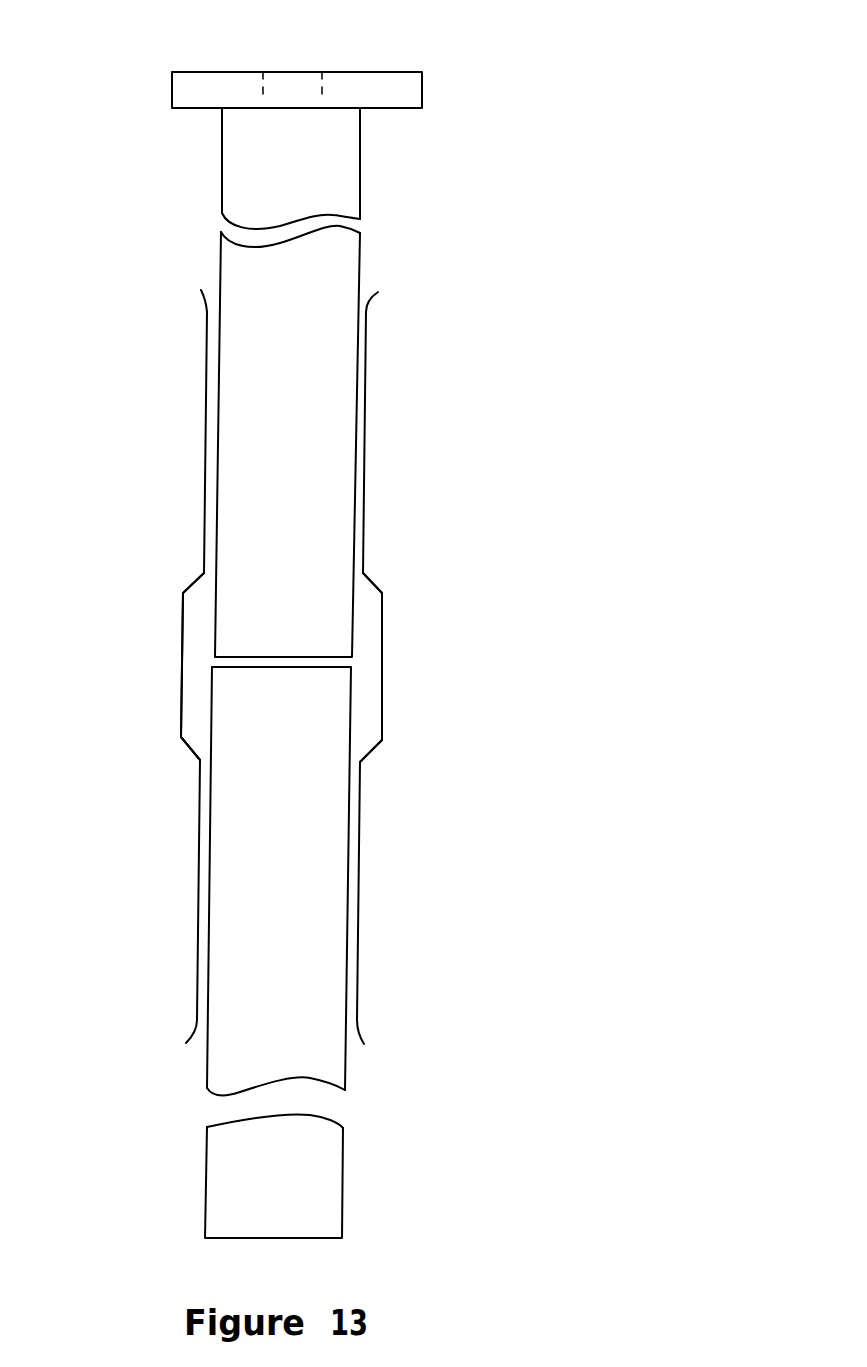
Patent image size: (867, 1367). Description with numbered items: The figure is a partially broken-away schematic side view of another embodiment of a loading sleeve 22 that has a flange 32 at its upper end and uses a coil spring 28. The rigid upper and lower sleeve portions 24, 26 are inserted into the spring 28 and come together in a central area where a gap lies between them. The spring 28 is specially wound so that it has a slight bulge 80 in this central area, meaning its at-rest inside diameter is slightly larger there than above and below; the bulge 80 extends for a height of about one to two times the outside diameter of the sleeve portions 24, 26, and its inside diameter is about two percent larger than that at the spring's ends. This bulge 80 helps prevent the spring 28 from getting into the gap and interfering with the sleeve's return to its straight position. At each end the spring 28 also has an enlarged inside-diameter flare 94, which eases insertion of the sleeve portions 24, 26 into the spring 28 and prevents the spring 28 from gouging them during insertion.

The loading sleeve 22 is at (502, 138).
The flange 32 is at (203, 70).
The upper sleeve portion 24 is at (220, 188).
The lower sleeve portion 26 is at (345, 1150).
The spring 28 is at (387, 430).
The bulge 80 is at (383, 607).
The flare 94 is at (203, 305).